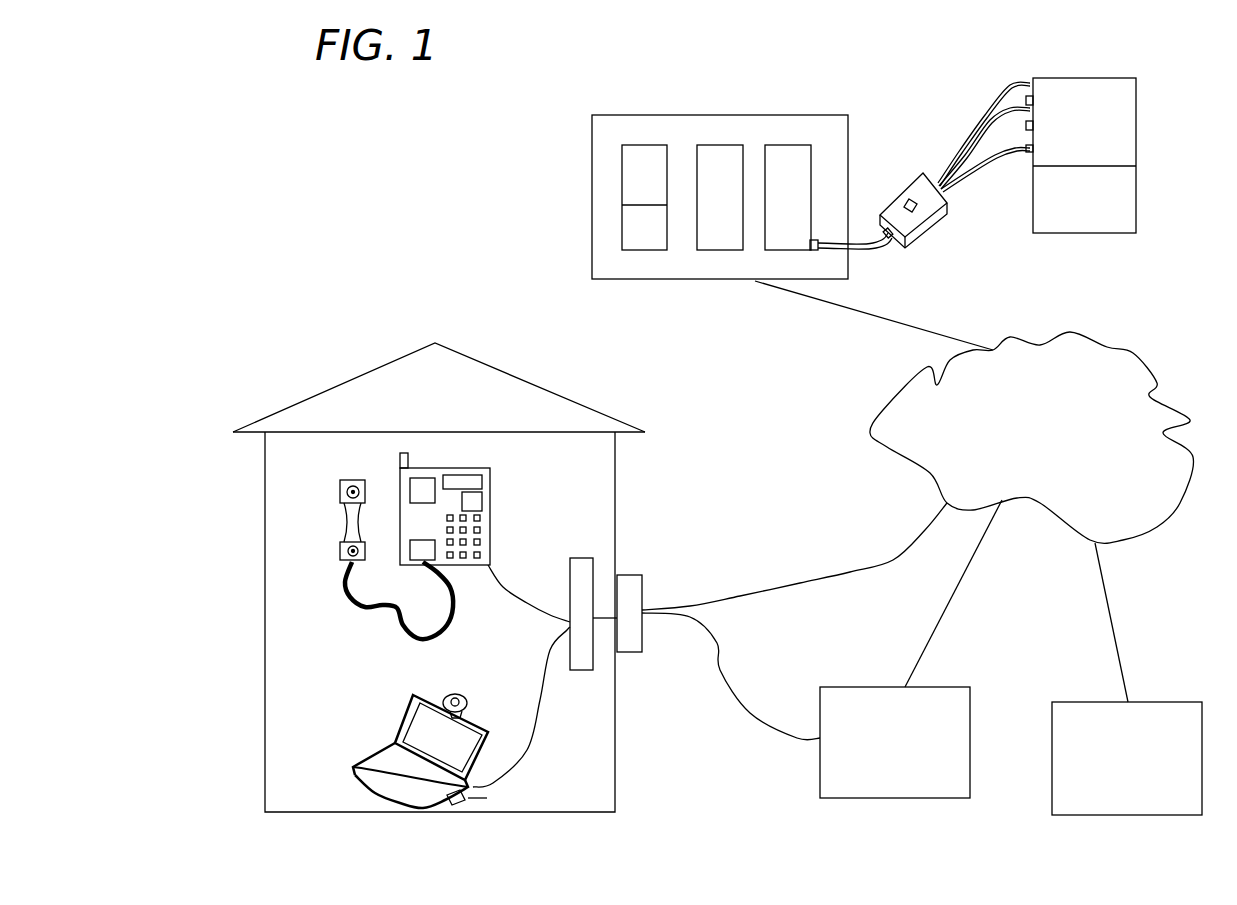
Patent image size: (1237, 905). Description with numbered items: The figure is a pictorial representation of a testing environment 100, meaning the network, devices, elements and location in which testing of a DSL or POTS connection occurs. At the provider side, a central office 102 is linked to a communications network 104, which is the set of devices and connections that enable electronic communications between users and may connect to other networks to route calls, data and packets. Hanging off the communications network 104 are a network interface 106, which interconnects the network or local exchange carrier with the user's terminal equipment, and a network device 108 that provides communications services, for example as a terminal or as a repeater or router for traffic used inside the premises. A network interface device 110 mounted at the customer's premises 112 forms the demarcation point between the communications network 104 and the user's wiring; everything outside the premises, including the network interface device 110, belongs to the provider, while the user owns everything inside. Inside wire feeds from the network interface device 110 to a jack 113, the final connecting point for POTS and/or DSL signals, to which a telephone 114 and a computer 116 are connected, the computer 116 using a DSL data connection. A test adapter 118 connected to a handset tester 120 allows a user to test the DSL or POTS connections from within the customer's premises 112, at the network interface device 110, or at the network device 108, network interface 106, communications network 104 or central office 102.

The testing environment 100 is at (262, 170).
The central office 102 is at (833, 130).
The communications network 104 is at (1015, 462).
The network interface 106 is at (1110, 795).
The network device 108 is at (878, 780).
The network interface device 110 is at (633, 650).
The customer's premises 112 is at (533, 382).
The jack 113 is at (577, 658).
The telephone 114 is at (474, 503).
The computer 116 is at (410, 780).
The test adapter 118 is at (893, 182).
The handset tester 120 is at (1068, 158).